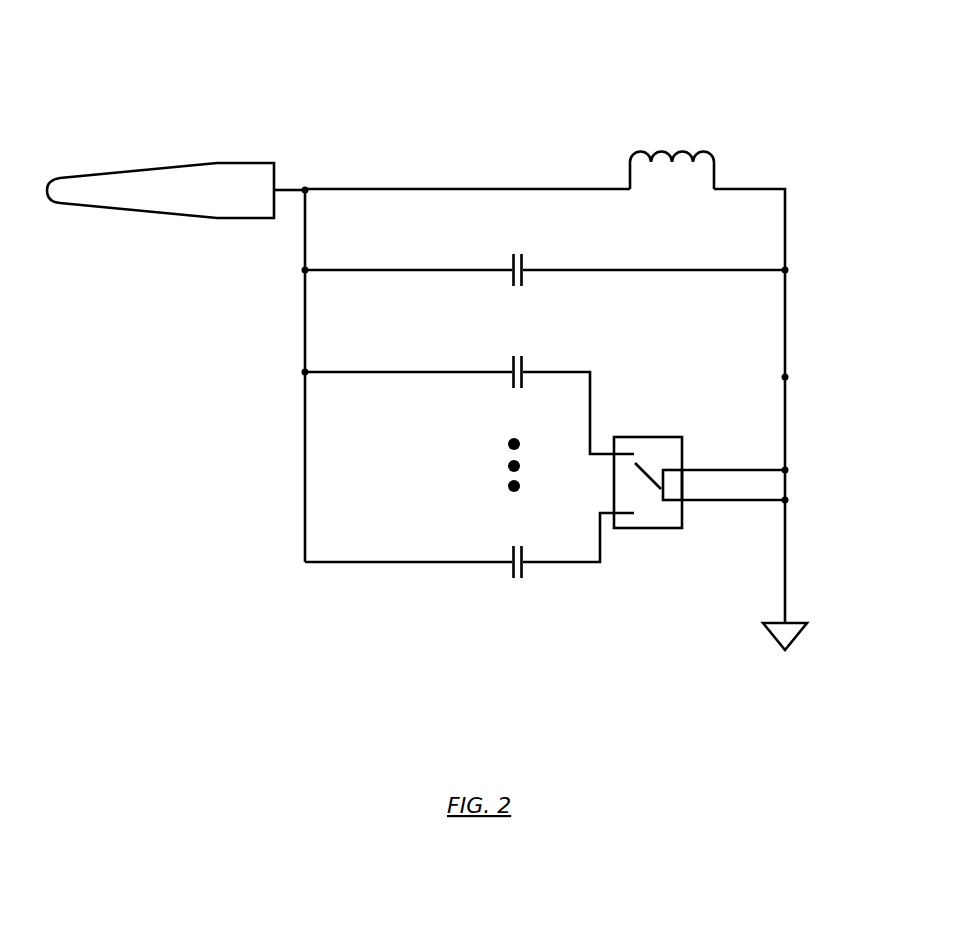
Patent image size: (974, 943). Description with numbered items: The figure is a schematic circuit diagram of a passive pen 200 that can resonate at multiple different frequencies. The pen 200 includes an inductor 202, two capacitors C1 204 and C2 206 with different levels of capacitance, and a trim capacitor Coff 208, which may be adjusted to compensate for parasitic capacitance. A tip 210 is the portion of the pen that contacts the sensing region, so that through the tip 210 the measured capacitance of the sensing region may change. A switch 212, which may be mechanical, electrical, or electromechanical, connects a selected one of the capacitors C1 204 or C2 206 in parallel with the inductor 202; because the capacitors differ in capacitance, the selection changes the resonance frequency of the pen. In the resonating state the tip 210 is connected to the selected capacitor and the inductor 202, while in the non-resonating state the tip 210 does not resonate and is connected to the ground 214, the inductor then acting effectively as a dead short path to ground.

The pen 200 is at (829, 100).
The inductor 202 is at (645, 143).
The capacitor C1 204 is at (500, 391).
The capacitor C2 206 is at (510, 575).
The trim capacitor Coff 208 is at (530, 282).
The tip 210 is at (190, 224).
The switch 212 is at (645, 538).
The ground 214 is at (770, 660).